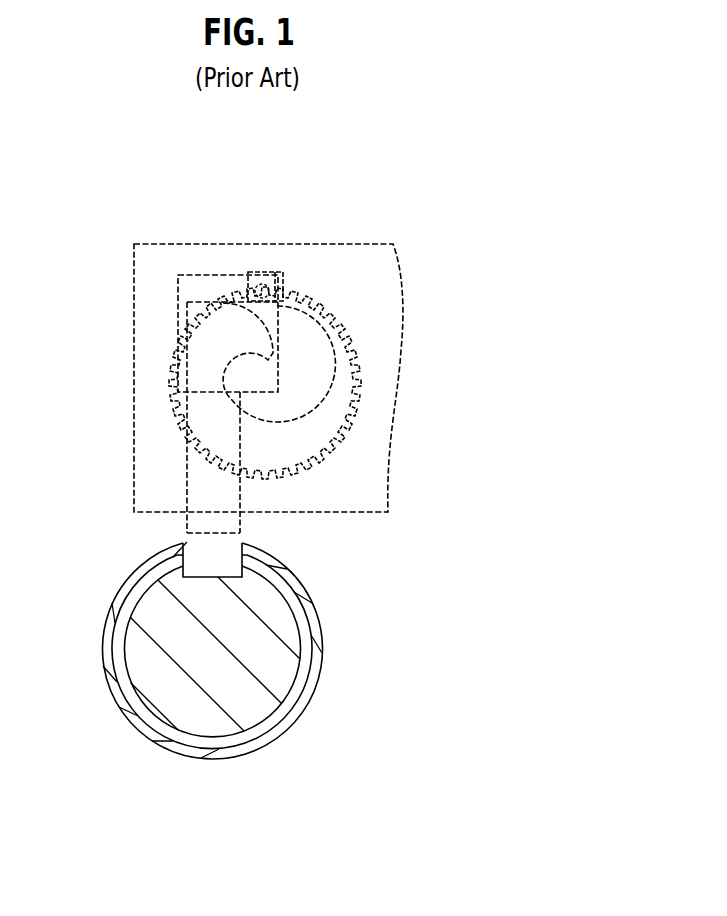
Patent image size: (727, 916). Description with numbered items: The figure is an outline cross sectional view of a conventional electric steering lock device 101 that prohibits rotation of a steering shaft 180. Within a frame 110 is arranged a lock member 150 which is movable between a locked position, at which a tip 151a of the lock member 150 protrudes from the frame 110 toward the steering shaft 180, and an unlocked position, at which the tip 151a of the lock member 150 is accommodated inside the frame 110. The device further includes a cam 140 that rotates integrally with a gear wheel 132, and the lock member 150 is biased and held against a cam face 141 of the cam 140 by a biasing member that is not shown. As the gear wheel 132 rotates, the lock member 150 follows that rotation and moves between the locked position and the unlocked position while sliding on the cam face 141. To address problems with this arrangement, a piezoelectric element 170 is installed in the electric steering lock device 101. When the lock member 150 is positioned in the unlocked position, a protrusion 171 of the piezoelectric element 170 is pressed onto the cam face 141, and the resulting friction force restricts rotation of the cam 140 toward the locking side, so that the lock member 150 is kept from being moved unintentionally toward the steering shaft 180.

The electric steering lock device 101 is at (477, 199).
The frame 110 is at (387, 263).
The gear wheel 132 is at (313, 245).
The piezoelectric element 170 is at (253, 295).
The protrusion 171 is at (250, 297).
The lock member 150 is at (150, 433).
The tip 151a is at (203, 526).
The cam 140 is at (356, 375).
The cam face 141 is at (297, 375).
The steering shaft 180 is at (293, 667).